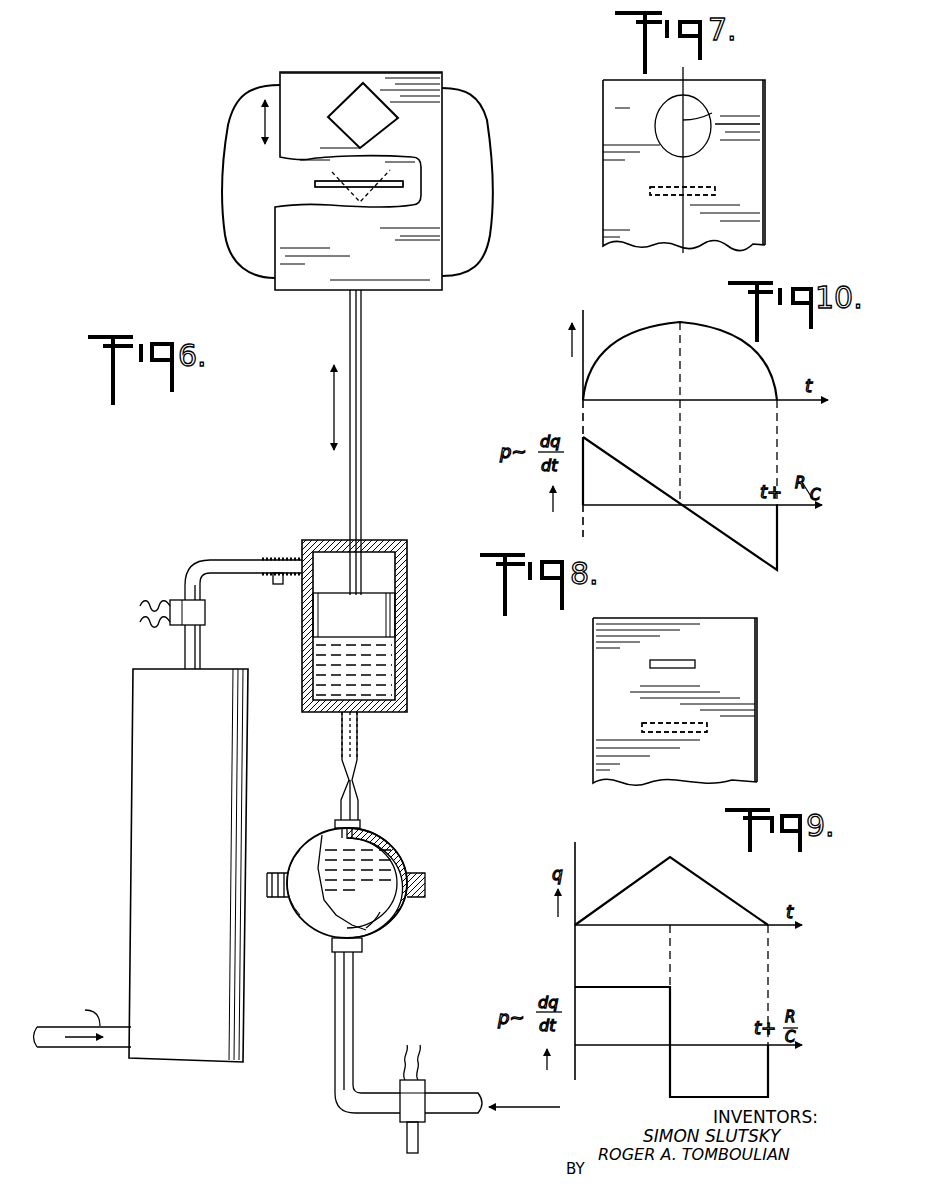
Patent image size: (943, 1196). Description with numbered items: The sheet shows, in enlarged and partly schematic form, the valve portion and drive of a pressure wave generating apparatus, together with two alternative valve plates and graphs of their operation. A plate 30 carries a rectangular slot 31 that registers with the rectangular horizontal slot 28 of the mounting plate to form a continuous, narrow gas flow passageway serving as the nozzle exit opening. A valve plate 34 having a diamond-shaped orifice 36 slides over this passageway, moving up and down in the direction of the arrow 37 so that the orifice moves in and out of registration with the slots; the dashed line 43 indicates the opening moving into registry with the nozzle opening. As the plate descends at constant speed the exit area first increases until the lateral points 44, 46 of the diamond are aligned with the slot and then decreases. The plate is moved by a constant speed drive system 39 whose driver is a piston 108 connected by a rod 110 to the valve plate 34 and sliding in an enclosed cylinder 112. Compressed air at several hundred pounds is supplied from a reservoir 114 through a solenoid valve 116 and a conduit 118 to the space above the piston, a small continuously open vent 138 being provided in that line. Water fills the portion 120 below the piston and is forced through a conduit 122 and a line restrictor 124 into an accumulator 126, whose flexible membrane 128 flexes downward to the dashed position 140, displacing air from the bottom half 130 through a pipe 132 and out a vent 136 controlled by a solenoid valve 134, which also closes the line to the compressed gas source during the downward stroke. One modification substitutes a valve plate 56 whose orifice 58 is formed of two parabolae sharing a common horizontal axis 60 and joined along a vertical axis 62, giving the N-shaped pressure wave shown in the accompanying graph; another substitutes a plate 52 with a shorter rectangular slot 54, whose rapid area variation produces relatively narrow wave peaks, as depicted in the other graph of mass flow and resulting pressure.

In FIG. 6, the plate 30 is at (470, 102).
In FIG. 6, the valve plate 34 is at (331, 70).
In FIG. 6, the orifice 36 is at (372, 95).
In FIG. 6, the lateral point of diamond-shaped orifice 44 is at (396, 120).
In FIG. 6, the lateral point of diamond-shaped orifice 46 is at (331, 118).
In FIG. 6, the rectangular horizontal slot 28 is at (315, 184).
In FIG. 7, the rectangular horizontal slot 28 is at (668, 198).
In FIG. 8, the rectangular horizontal slot 28 is at (698, 735).
In FIG. 6, the rectangular slot 31 is at (359, 184).
In FIG. 7, the rectangular slot 31 is at (682, 191).
In FIG. 8, the rectangular slot 31 is at (674, 727).
In FIG. 6, the dashed line 43 is at (373, 193).
In FIG. 6, the arrow 37 is at (330, 411).
In FIG. 6, the rod 110 is at (362, 458).
In FIG. 6, the cylinder 112 is at (384, 541).
In FIG. 6, the conduit 118 is at (290, 561).
In FIG. 6, the small vent 138 is at (275, 581).
In FIG. 6, the piston 108 is at (370, 624).
In FIG. 6, the portion of housing below piston 120 is at (382, 673).
In FIG. 6, the solenoid valve 116 is at (205, 612).
In FIG. 6, the reservoir 114 is at (200, 797).
In FIG. 6, the conduit 122 is at (358, 750).
In FIG. 6, the line restrictor 124 is at (360, 772).
In FIG. 6, the constant speed drive system 39 is at (436, 739).
In FIG. 6, the accumulator 126 is at (366, 846).
In FIG. 6, the flexible membrane 128 is at (402, 870).
In FIG. 6, the flexed position of membrane 140 is at (380, 914).
In FIG. 6, the bottom half of accumulator 130 is at (372, 918).
In FIG. 6, the pipe 132 is at (355, 975).
In FIG. 6, the solenoid valve 134 is at (397, 1121).
In FIG. 6, the vent 136 is at (418, 1147).
In FIG. 7, the valve plate 56 is at (603, 166).
In FIG. 7, the orifice 58 is at (658, 112).
In FIG. 7, the vertical axis 62 is at (713, 113).
In FIG. 7, the common horizontal axis 60 is at (733, 128).
In FIG. 8, the plate 52 is at (757, 692).
In FIG. 8, the rectangular slot 54 is at (688, 659).